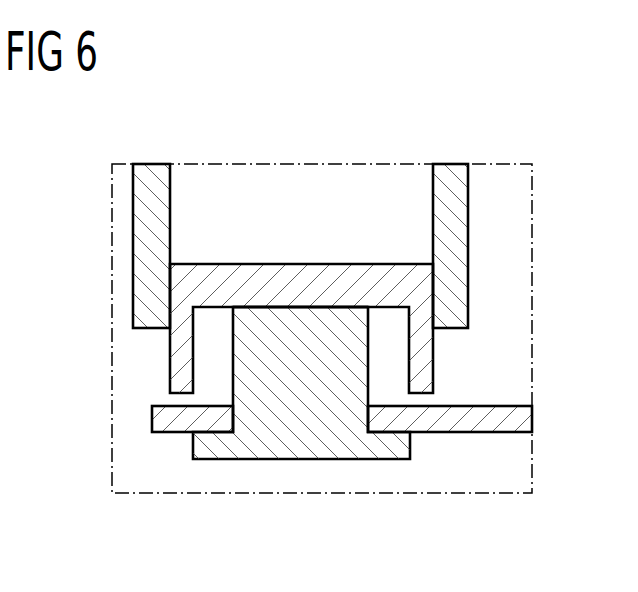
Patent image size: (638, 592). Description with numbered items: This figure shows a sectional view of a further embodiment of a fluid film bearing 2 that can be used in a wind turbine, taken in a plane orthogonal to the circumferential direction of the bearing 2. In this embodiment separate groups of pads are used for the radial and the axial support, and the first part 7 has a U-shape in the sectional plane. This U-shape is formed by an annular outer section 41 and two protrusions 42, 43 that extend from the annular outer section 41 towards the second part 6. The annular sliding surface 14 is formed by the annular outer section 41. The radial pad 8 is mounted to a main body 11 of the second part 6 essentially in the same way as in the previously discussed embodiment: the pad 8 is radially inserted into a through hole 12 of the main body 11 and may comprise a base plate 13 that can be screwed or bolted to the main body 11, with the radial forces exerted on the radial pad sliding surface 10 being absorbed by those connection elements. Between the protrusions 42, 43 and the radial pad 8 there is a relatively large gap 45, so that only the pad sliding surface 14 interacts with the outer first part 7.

The bearing 2 is at (129, 435).
The second part 6 is at (509, 394).
The first part 7 is at (363, 210).
The pad 8 is at (333, 423).
The radial pad sliding surface 10 is at (263, 303).
The main body 11 is at (478, 418).
The through hole 12 is at (227, 415).
The base plate 13 is at (388, 448).
The annular sliding surface 14 is at (297, 312).
The annular outer section 41 is at (313, 283).
The protrusion 42 is at (181, 373).
The protrusion 43 is at (428, 357).
The gap 45 is at (208, 352).